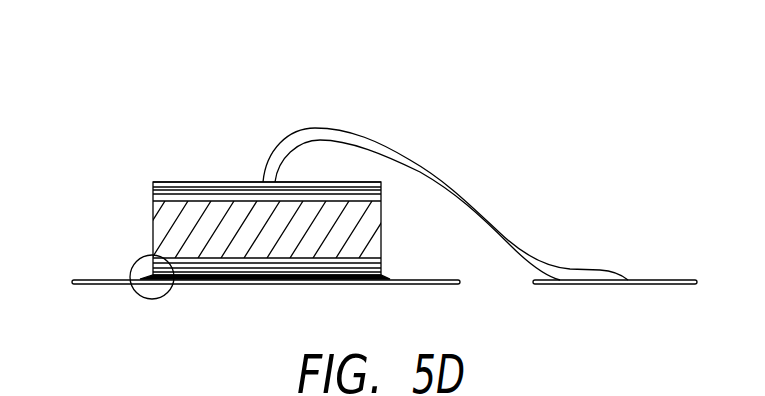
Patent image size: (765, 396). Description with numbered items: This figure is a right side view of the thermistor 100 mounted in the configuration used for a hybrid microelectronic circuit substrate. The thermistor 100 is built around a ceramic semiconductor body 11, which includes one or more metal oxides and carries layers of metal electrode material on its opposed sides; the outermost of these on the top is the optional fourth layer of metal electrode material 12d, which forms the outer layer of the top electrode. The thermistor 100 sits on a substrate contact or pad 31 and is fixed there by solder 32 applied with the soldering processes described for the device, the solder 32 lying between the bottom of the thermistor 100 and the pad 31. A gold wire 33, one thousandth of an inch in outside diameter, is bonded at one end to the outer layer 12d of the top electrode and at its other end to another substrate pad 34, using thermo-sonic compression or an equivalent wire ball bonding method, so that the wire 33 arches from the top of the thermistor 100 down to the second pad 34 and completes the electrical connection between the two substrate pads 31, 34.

The thermistor 100 is at (269, 96).
The ceramic semiconductor body 11 is at (384, 237).
The fourth layer of metal electrode material 12d is at (228, 181).
The substrate contact or pad 31 is at (94, 278).
The solder 32 is at (147, 271).
The gold wire 33 is at (469, 181).
The substrate pad 34 is at (665, 278).